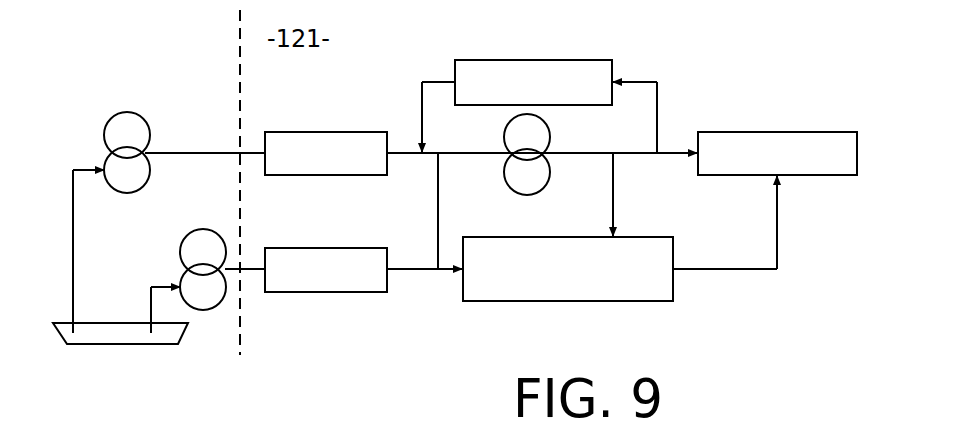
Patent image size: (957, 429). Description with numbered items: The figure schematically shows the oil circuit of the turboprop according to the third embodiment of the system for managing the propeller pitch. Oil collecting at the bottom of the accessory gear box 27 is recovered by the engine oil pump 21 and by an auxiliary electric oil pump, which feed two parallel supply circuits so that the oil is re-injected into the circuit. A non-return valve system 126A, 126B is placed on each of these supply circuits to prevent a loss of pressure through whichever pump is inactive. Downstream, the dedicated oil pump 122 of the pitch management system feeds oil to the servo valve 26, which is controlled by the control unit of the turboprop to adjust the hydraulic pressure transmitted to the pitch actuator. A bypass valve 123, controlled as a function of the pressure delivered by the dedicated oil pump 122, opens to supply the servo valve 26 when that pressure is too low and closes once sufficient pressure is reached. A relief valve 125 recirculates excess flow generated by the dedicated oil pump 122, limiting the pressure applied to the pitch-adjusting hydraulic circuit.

The engine oil pump 21 is at (127, 123).
The accessory gear box 27 is at (105, 332).
The non-return valve system 126A is at (290, 143).
The non-return valve system 126B is at (290, 259).
The relief valve 125 is at (605, 68).
The dedicated oil pump 122 is at (537, 127).
The bypass valve 123 is at (550, 247).
The servo valve 26 is at (745, 140).